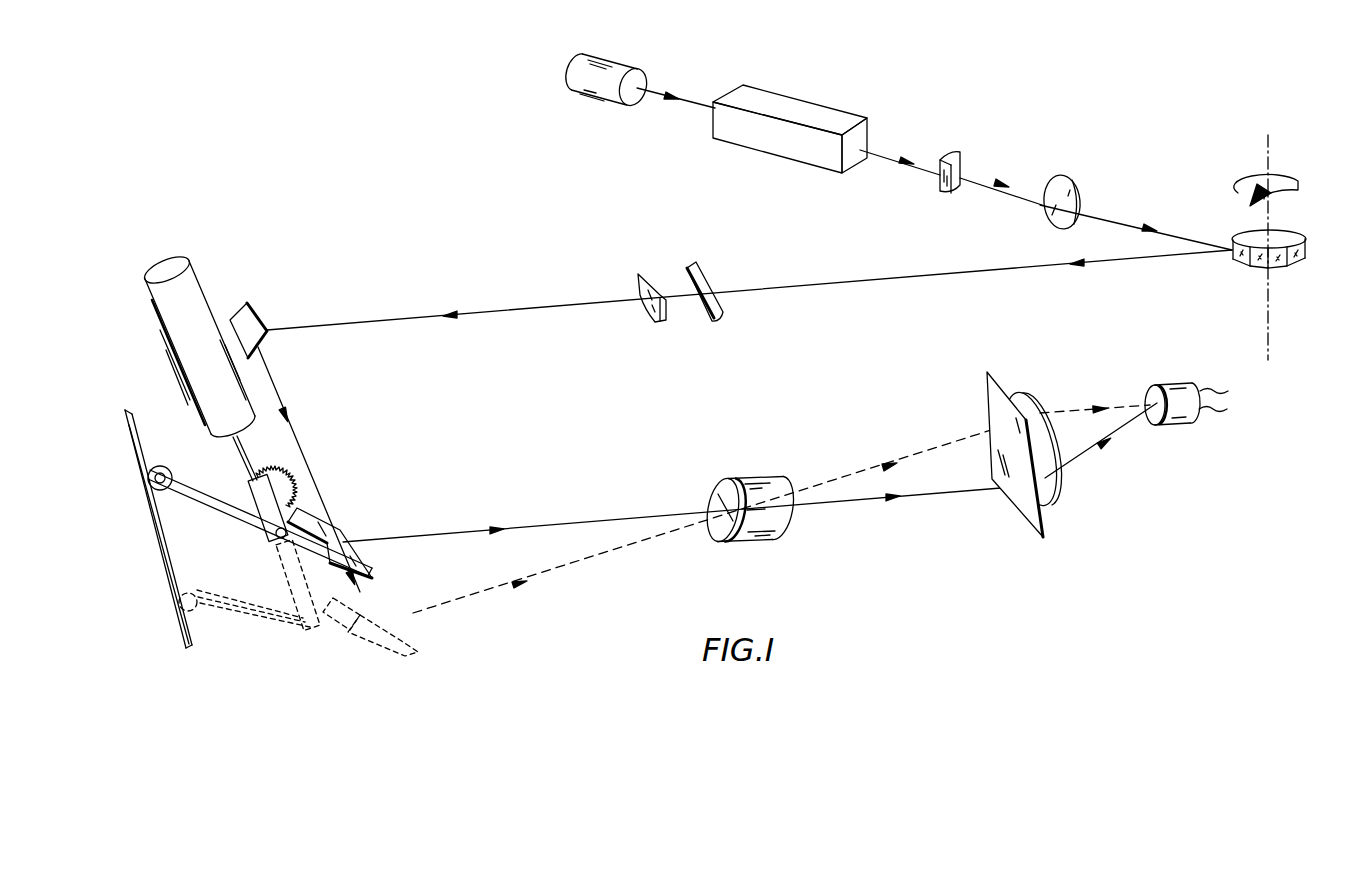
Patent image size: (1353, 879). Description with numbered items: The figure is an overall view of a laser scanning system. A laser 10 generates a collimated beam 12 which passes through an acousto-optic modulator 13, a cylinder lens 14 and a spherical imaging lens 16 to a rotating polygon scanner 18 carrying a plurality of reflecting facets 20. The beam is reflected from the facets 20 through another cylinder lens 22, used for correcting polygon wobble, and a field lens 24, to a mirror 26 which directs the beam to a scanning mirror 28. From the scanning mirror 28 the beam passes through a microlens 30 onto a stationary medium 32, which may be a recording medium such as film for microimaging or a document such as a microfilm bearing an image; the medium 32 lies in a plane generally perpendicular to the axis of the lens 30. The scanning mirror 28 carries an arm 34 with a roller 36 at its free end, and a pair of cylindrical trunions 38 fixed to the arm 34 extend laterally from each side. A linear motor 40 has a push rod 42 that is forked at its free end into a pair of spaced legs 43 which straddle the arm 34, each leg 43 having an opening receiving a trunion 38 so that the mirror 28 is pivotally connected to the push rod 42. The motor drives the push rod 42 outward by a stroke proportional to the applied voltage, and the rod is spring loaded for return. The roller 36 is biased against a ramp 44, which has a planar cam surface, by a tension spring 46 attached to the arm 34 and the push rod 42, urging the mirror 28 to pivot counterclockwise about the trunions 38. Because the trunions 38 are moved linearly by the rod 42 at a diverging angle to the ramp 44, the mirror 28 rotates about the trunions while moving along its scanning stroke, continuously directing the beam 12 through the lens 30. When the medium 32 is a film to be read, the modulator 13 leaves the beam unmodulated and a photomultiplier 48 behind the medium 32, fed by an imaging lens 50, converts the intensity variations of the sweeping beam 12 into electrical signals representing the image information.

The laser 10 is at (612, 63).
The collimated beam 12 is at (691, 107).
The acousto-optic modulator 13 is at (802, 102).
The cylinder lens 14 is at (972, 146).
The spherical imaging lens 16 is at (1085, 170).
The rotating polygon scanner 18 is at (1290, 236).
The reflecting facets 20 is at (1252, 264).
The cylinder lens 22 is at (712, 274).
The field lens 24 is at (640, 278).
The mirror 26 is at (258, 314).
The scanning mirror 28 is at (343, 526).
The microlens 30 is at (765, 541).
The stationary medium 32 is at (1036, 531).
The arm 34 is at (214, 497).
The roller 36 is at (157, 466).
The cylindrical trunions 38 is at (281, 540).
The linear motor 40 is at (160, 300).
The push rod 42 is at (250, 463).
The legs 43 is at (270, 524).
The ramp 44 is at (177, 560).
The spring 46 is at (256, 466).
The photomultiplier 48 is at (1182, 426).
The lens 50 is at (1058, 492).